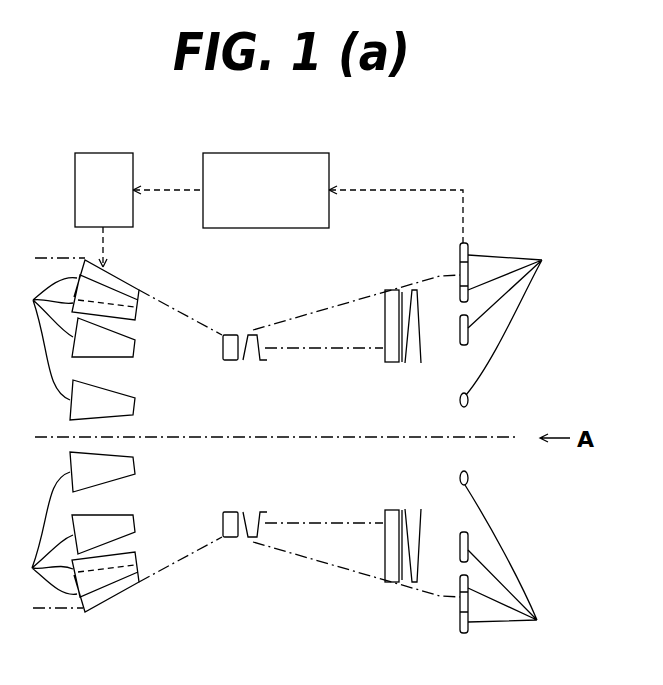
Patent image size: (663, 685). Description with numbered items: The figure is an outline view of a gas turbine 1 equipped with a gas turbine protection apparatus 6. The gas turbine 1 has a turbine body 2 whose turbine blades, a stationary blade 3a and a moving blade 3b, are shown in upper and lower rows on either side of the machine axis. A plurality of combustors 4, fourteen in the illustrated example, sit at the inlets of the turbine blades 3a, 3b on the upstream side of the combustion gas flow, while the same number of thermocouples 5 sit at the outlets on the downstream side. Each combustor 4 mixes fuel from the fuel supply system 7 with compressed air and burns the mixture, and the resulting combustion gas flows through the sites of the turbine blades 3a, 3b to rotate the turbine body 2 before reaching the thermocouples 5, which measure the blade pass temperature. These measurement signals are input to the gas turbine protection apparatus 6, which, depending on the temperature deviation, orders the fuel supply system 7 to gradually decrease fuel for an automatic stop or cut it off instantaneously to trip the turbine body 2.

The gas turbine 1 is at (517, 225).
The turbine body 2 is at (304, 565).
The turbine blade (stationary blade) 3a is at (232, 338).
The turbine blade (moving blade) 3b is at (253, 337).
The combustor 4 is at (77, 435).
The thermocouple 5 is at (510, 441).
The gas turbine protection apparatus 6 is at (133, 171).
The fuel supply system 7 is at (329, 171).